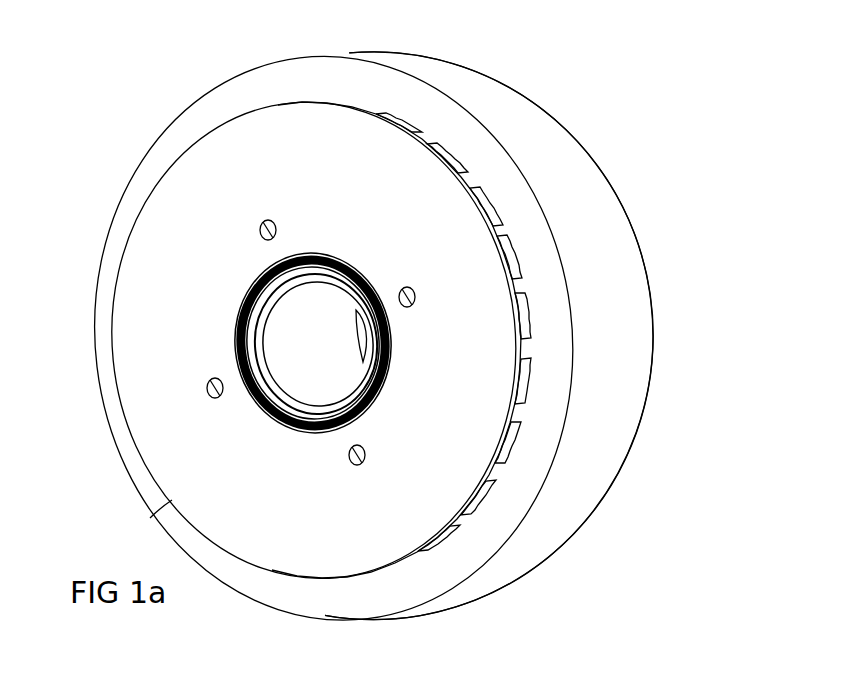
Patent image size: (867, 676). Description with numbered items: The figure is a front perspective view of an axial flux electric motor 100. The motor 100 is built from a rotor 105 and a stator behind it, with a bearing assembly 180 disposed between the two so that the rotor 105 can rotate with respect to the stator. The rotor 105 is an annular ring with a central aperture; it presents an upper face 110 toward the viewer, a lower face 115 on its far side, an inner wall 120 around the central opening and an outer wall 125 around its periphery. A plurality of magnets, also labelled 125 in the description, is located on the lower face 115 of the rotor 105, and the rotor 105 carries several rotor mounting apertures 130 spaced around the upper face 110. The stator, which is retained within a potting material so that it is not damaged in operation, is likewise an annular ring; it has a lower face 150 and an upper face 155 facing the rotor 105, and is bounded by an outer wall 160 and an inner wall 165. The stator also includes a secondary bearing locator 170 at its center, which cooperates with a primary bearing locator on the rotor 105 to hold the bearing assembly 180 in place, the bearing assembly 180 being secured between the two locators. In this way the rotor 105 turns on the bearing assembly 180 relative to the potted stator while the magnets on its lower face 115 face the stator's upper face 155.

The axial flux electric motor 100 is at (600, 80).
The rotor 105 is at (173, 219).
The upper face 110 is at (273, 135).
The lower face 115 is at (388, 115).
The inner wall 120 is at (243, 318).
The outer wall 125 is at (503, 239).
The rotor mounting apertures 130 is at (262, 222).
The lower face 150 is at (664, 476).
The upper face 155 is at (555, 352).
The outer wall 160 is at (563, 164).
The inner wall 165 is at (310, 306).
The secondary bearing locator 170 is at (373, 388).
The bearing assembly 180 is at (306, 420).